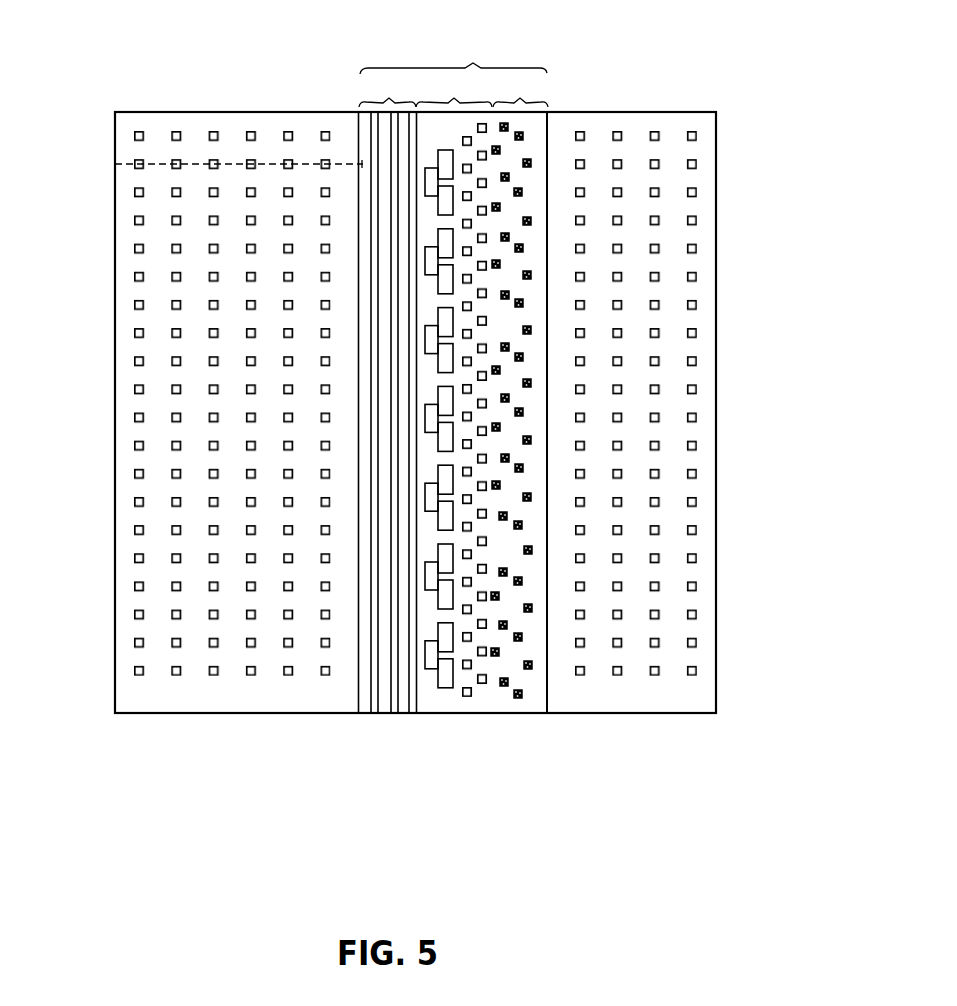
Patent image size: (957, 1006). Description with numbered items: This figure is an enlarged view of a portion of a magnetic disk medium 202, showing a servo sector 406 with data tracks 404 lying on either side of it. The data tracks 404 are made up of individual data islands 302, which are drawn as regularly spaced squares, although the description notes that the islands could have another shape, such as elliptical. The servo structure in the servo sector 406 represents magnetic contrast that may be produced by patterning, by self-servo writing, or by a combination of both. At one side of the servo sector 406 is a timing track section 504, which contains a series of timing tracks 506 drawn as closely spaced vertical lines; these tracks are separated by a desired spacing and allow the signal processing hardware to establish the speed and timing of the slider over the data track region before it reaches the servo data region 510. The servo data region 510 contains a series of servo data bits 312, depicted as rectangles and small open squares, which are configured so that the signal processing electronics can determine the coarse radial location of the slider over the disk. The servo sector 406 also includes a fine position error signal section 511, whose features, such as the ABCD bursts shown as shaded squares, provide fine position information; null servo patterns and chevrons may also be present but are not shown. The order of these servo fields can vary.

The substrate panel 202 is at (180, 713).
The data islands 302 is at (176, 159).
The servo data bits 312 is at (469, 696).
The data tracks 404 is at (115, 164).
The servo sector 406 is at (503, 402).
The timing track section 504 is at (355, 436).
The timing tracks 506 is at (372, 713).
The servo data region 510 is at (511, 414).
The fine position error signal (PES) section 511 is at (548, 107).